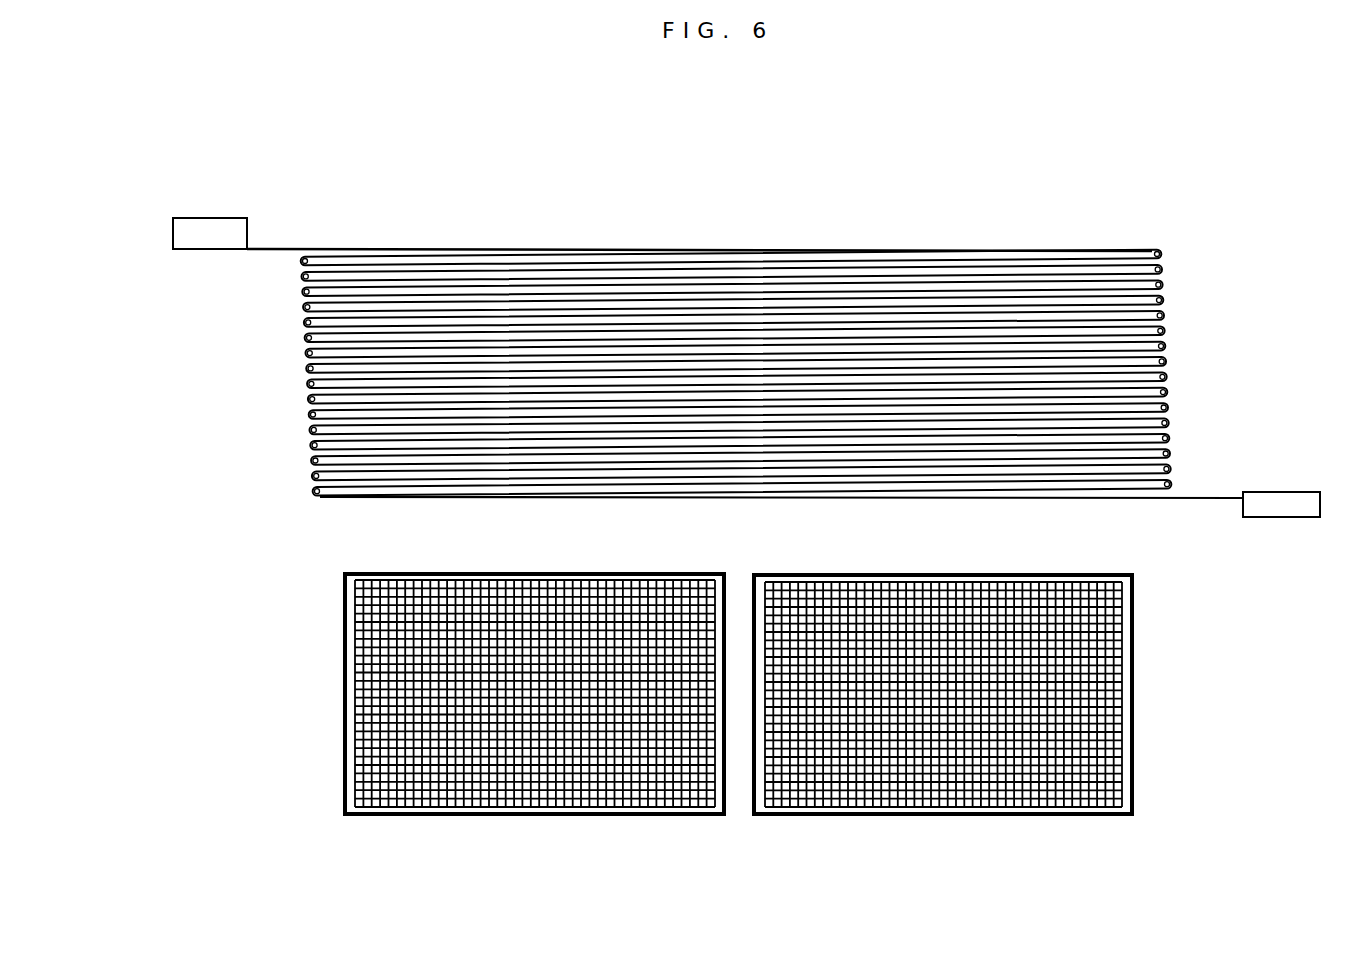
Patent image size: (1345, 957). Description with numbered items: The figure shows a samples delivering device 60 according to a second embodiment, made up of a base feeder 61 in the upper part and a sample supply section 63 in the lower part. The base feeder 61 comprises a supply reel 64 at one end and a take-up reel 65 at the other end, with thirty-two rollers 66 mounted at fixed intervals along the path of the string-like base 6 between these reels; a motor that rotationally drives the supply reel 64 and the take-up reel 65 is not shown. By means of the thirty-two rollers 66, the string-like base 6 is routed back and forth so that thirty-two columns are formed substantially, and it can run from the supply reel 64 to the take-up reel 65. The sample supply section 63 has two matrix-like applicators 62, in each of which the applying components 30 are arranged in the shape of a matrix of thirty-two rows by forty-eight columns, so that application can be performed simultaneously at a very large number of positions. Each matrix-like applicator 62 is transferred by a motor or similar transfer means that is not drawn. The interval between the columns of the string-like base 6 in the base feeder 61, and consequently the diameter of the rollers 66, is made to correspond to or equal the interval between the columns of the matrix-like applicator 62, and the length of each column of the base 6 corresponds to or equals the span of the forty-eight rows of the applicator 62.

The samples delivering device 60 is at (735, 99).
The string-like base 6 is at (575, 250).
The base feeder 61 is at (658, 333).
The matrix-like applicator 62 is at (677, 739).
The sample supply section 63 is at (641, 739).
The supply reel 64 is at (1278, 492).
The take-up reel 65 is at (208, 218).
The roller 66 is at (1155, 252).
The applying component 30 is at (397, 815).